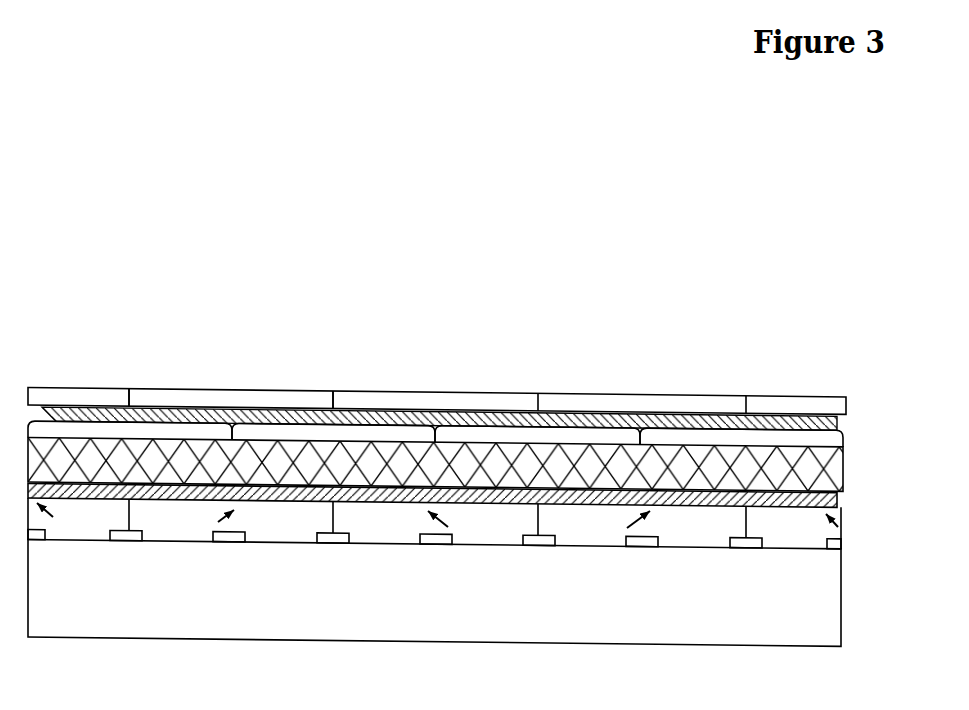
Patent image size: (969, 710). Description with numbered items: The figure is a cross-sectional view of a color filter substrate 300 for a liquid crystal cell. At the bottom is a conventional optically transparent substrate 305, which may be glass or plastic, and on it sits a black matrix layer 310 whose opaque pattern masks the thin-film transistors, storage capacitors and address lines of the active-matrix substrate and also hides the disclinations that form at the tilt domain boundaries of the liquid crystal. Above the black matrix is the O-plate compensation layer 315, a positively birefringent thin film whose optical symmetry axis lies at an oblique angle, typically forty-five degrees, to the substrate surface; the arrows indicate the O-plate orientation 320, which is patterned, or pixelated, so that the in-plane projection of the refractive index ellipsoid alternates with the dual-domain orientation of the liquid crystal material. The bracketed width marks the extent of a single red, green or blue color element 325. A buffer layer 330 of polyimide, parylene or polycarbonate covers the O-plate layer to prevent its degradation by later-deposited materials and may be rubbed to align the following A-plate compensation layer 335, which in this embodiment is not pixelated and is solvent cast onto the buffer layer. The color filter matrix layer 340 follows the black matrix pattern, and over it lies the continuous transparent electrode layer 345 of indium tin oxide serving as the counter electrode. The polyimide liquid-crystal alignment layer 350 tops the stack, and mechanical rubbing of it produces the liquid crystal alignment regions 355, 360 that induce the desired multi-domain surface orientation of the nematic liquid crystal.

The color filter substrate 300 is at (462, 273).
The optically transparent substrate 305 is at (842, 589).
The black matrix layer 310 is at (135, 541).
The O-plate compensation layer 315 is at (845, 514).
The O-plate orientation 320 is at (230, 515).
The single color element 325 is at (640, 580).
The buffer layer 330 is at (837, 497).
The A-plate compensation layer 335 is at (845, 466).
The color filter matrix layer 340 is at (844, 441).
The transparent electrode layer 345 is at (837, 423).
The polyimide liquid-crystal alignment layer 350 is at (847, 404).
The liquid crystal alignment region 355 is at (258, 398).
The liquid crystal alignment region 360 is at (400, 400).